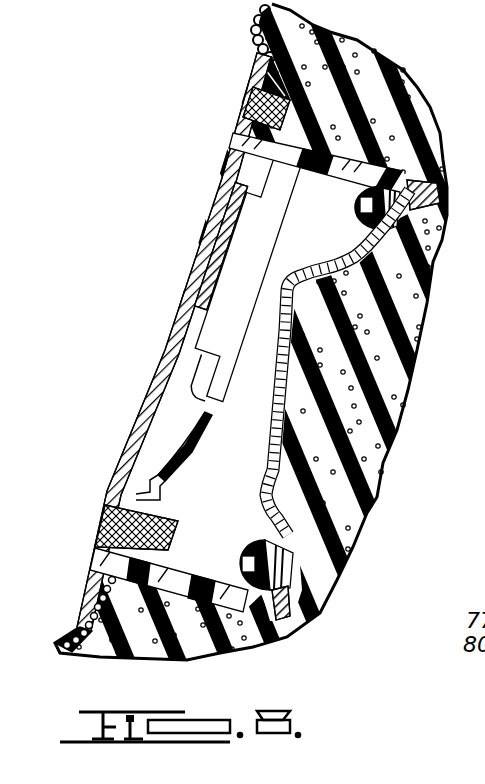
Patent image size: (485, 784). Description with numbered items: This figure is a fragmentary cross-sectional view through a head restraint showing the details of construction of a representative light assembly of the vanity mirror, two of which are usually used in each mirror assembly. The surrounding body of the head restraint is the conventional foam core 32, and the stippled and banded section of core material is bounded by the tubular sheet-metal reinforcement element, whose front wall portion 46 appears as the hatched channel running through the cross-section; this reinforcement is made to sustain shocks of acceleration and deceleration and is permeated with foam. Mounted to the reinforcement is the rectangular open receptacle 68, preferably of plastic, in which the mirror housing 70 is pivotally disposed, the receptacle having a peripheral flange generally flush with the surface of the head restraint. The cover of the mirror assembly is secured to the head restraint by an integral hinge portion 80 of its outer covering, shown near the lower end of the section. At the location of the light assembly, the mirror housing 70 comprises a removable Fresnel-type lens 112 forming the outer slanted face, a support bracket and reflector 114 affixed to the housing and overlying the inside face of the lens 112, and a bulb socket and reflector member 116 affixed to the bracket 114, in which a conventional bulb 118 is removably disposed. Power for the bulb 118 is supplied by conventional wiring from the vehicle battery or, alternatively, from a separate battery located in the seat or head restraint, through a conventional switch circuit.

The foam core 32 is at (400, 367).
The front wall portion 46 is at (288, 407).
The rectangular open receptacle 68 is at (194, 580).
The mirror housing 70 is at (200, 199).
The integral hinge portion 80 is at (70, 637).
The removable Fresnel-type lens 112 is at (165, 355).
The support bracket and reflector 114 is at (180, 476).
The bulb socket and reflector member 116 is at (265, 247).
The bulb 118 is at (200, 343).